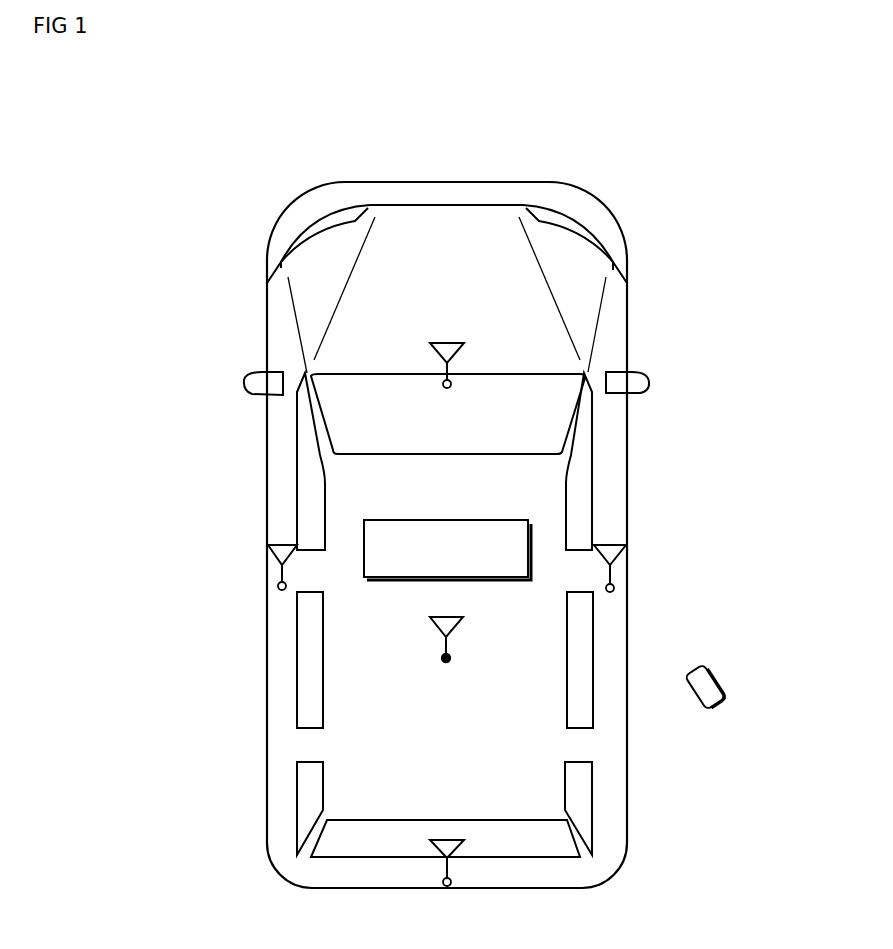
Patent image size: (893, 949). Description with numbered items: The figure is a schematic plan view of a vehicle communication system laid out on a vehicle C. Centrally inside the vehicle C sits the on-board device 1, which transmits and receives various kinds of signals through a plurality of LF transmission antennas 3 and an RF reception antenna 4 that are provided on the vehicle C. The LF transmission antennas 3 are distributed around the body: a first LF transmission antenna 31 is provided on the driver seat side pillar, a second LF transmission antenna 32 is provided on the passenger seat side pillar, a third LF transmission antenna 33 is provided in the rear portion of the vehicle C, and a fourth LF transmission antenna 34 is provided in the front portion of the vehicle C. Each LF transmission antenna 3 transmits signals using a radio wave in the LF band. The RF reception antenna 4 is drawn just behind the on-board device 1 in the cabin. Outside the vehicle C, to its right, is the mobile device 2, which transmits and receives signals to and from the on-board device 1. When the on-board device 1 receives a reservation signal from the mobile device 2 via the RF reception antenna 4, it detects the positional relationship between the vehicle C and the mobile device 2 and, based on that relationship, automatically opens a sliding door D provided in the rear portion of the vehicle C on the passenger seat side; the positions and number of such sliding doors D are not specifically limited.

The on-board device 1 is at (478, 519).
The mobile device 2 is at (718, 677).
The LF transmission antennas 3 is at (444, 592).
The first LF transmission antenna 31 is at (618, 544).
The second LF transmission antenna 32 is at (275, 546).
The third LF transmission antenna 33 is at (457, 840).
The fourth LF transmission antenna 34 is at (453, 343).
The RF reception antenna 4 is at (463, 617).
The vehicle C is at (624, 237).
The sliding door D is at (275, 656).